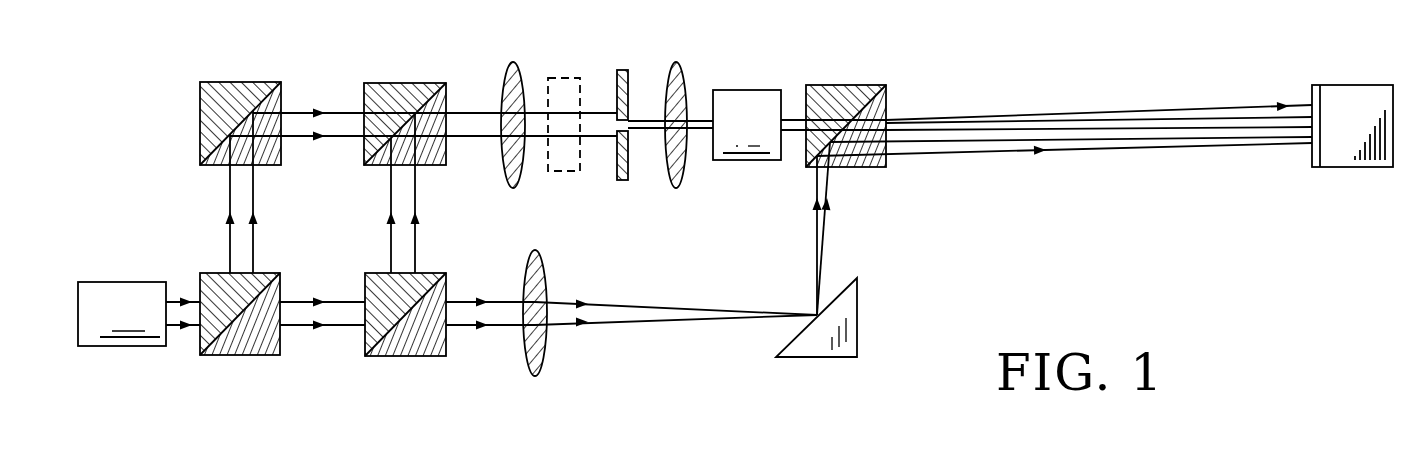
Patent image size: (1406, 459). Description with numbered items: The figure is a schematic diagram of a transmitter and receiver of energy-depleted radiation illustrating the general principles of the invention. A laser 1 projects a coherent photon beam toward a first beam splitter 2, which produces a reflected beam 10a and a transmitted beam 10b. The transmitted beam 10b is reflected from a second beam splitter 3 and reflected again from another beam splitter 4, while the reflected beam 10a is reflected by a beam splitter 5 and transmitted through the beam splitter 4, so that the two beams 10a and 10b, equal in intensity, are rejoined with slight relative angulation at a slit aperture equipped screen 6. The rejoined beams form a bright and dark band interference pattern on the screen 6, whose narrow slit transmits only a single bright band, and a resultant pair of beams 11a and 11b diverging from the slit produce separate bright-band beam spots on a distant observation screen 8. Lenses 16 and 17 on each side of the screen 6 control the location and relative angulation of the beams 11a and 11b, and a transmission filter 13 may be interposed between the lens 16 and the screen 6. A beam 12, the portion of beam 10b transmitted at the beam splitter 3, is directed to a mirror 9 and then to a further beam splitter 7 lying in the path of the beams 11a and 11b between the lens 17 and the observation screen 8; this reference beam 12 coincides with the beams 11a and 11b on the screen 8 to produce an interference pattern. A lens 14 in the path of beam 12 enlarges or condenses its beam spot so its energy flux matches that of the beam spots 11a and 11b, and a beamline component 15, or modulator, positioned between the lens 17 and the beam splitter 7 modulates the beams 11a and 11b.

The laser 1 is at (120, 347).
The first beam splitter 2 is at (243, 356).
The second beam splitter 3 is at (410, 357).
The beam splitter 4 is at (400, 83).
The beam splitter 5 is at (226, 82).
The slit aperture equipped screen 6 is at (622, 70).
The beam splitter 7 is at (850, 85).
The observation screen 8 is at (1316, 85).
The mirror 9 is at (858, 322).
The reflected beam 10a is at (235, 249).
The transmitted beam 10b is at (395, 251).
The beam 11a is at (1261, 138).
The beam 11b is at (1248, 118).
The reference beam 12 is at (640, 310).
The transmission filter 13 is at (562, 78).
The lens 14 is at (546, 365).
The beamline component 15 is at (745, 90).
The lens 16 is at (513, 62).
The lens 17 is at (684, 65).